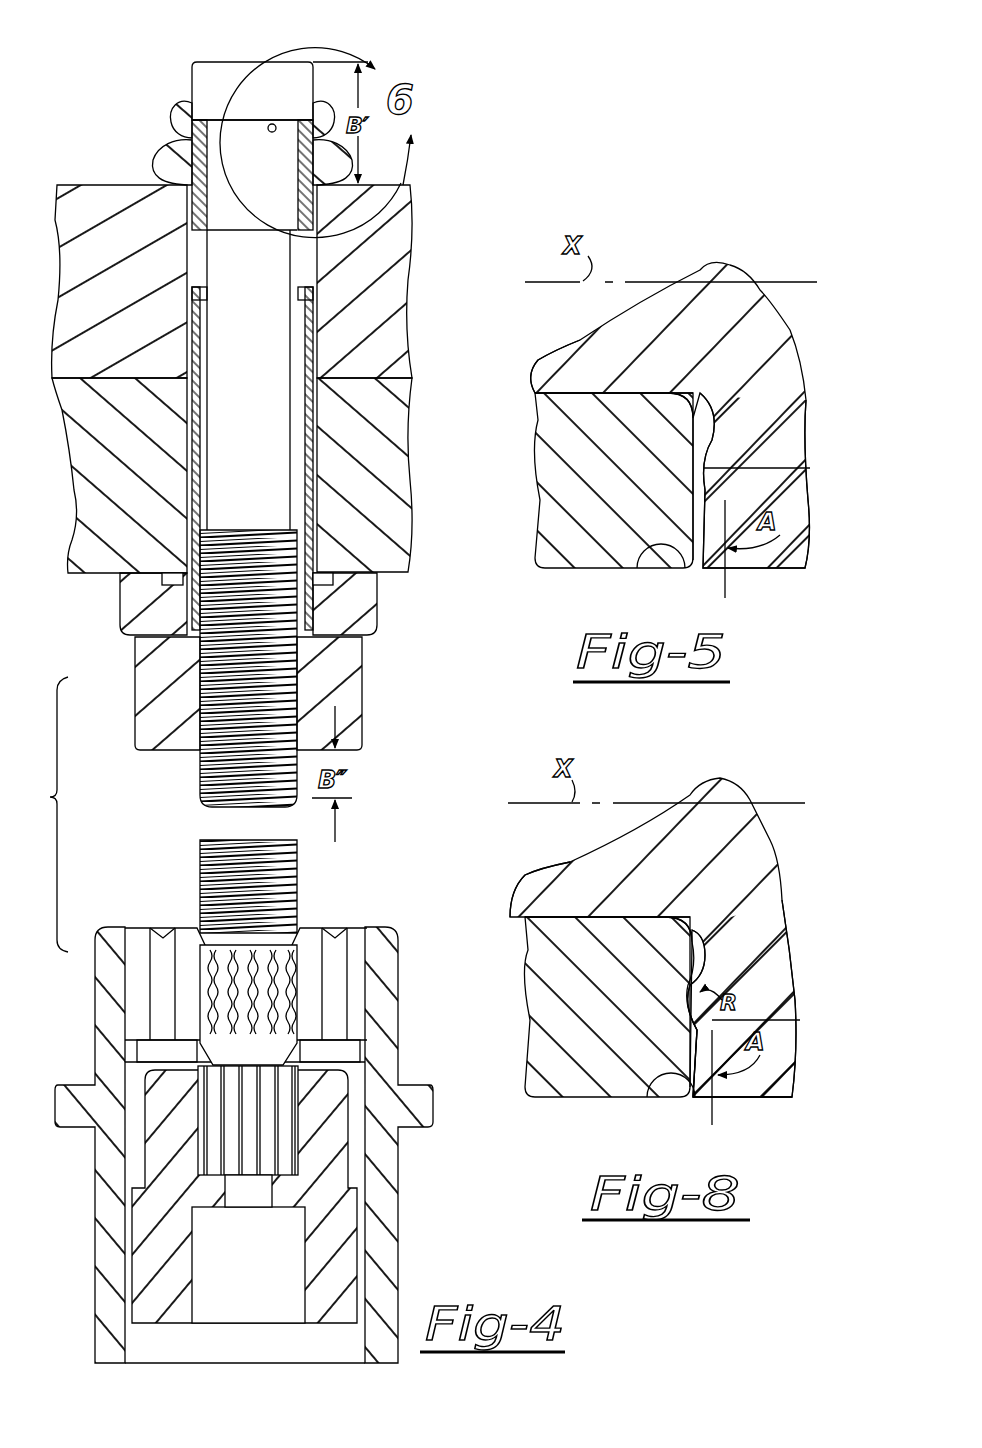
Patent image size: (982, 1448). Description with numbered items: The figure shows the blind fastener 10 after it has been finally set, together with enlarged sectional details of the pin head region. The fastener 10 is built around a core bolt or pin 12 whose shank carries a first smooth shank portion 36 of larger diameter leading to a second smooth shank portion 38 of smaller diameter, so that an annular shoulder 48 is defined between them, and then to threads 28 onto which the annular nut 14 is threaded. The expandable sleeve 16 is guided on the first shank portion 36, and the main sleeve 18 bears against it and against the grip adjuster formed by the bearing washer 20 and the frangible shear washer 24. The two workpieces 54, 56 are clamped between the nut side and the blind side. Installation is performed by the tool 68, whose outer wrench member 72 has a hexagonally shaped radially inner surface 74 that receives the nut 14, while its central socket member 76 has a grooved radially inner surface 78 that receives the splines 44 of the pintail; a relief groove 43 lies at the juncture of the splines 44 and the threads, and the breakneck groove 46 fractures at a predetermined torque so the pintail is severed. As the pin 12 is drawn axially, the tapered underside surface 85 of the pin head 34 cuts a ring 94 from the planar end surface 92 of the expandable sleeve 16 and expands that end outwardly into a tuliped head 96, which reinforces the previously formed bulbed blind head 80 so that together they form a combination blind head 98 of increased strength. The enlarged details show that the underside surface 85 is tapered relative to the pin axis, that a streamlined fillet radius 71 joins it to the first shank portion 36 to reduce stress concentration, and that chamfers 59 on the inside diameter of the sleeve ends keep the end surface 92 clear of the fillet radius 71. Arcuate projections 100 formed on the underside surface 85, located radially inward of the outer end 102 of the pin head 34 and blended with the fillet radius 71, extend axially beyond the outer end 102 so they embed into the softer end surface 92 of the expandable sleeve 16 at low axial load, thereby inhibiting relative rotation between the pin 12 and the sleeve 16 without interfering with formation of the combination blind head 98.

In FIG. 4, the blind fastener 10 is at (207, 119).
In FIG. 5, the pin 12 is at (758, 337).
In FIG. 8, the pin 12 is at (755, 858).
In FIG. 4, the nut 14 is at (350, 684).
In FIG. 4, the expandable sleeve 16 is at (185, 207).
In FIG. 5, the expandable sleeve 16 is at (568, 523).
In FIG. 8, the expandable sleeve 16 is at (600, 1062).
In FIG. 4, the main sleeve 18 is at (307, 463).
In FIG. 4, the bearing washer 20 is at (363, 600).
In FIG. 4, the shear washer 24 is at (373, 616).
In FIG. 4, the threads 28 is at (203, 754).
In FIG. 8, the pin head 34 is at (782, 1080).
In FIG. 4, the first smooth shank portion 36 is at (272, 174).
In FIG. 5, the first smooth shank portion 36 is at (583, 353).
In FIG. 8, the first smooth shank portion 36 is at (577, 870).
In FIG. 4, the second smooth shank portion 38 is at (258, 348).
In FIG. 4, the relief groove 43 is at (213, 940).
In FIG. 4, the splines 44 is at (287, 1007).
In FIG. 4, the breakneck groove 46 is at (227, 813).
In FIG. 4, the shoulder 48 is at (225, 232).
In FIG. 4, the workpiece 54 is at (398, 264).
In FIG. 4, the workpiece 56 is at (373, 536).
In FIG. 5, the chamfers 59 is at (700, 400).
In FIG. 8, the chamfers 59 is at (690, 925).
In FIG. 4, the tool 68 is at (276, 1120).
In FIG. 5, the fillet radius 71 is at (690, 430).
In FIG. 8, the fillet radius 71 is at (668, 945).
In FIG. 4, the outer wrench member 72 is at (380, 1015).
In FIG. 4, the hexagonally shaped radially inner surface 74 is at (360, 951).
In FIG. 4, the central socket member 76 is at (340, 1090).
In FIG. 4, the radially inner surface 78 is at (303, 1158).
In FIG. 4, the bulbed blind head 80 is at (153, 173).
In FIG. 4, the underside surface 85 is at (272, 124).
In FIG. 5, the underside surface 85 is at (648, 568).
In FIG. 8, the underside surface 85 is at (655, 1097).
In FIG. 5, the end surface 92 is at (706, 468).
In FIG. 8, the end surface 92 is at (700, 978).
In FIG. 4, the ring 94 is at (242, 62).
In FIG. 4, the tuliped head 96 is at (165, 134).
In FIG. 4, the combination blind head 98 is at (152, 118).
In FIG. 5, the projections 100 is at (722, 455).
In FIG. 8, the projections 100 is at (735, 1020).
In FIG. 8, the outer end 102 is at (690, 1100).